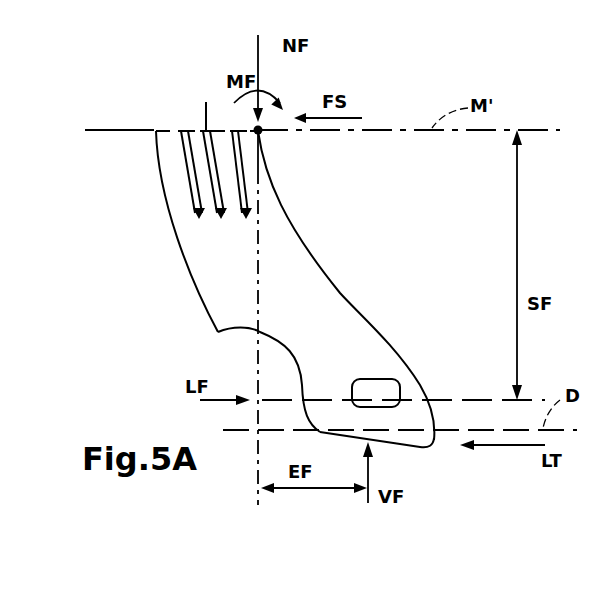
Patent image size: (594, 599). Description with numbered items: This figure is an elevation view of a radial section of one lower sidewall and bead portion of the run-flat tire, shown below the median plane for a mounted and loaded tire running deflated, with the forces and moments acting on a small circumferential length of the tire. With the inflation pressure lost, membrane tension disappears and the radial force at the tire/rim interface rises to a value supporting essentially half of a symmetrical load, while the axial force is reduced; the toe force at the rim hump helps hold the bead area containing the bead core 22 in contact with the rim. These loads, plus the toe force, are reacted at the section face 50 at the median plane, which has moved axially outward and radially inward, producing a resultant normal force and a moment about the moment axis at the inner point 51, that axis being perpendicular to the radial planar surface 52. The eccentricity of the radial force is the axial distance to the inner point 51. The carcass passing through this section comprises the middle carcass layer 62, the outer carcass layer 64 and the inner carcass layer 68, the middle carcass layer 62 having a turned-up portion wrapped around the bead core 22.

The bead core 22 is at (392, 390).
The section face 50 is at (197, 115).
The inner point 51 is at (263, 134).
The radial planar surface 52 is at (300, 288).
The middle carcass layer 62 is at (243, 188).
The outer carcass layer 64 is at (208, 177).
The inner carcass layer 68 is at (252, 186).